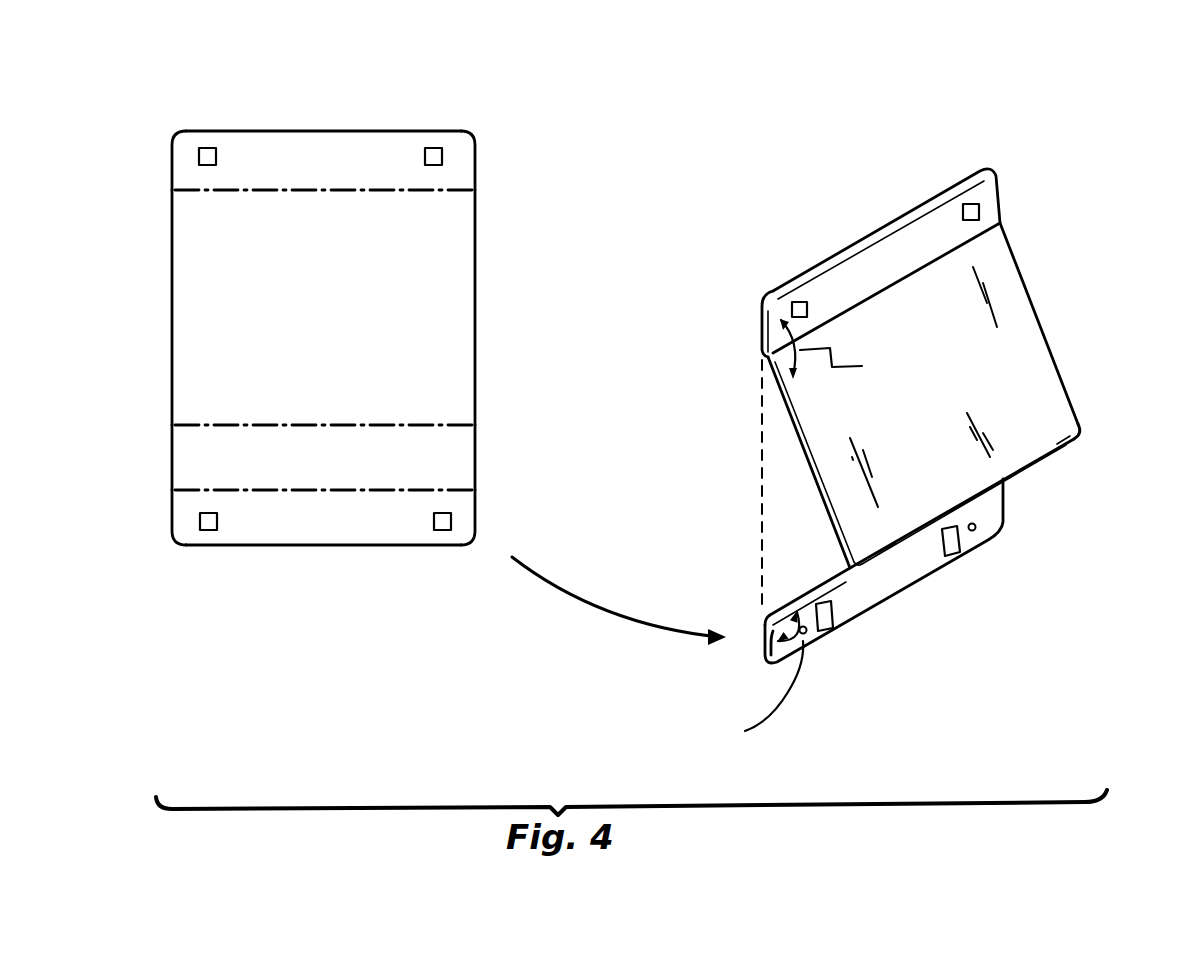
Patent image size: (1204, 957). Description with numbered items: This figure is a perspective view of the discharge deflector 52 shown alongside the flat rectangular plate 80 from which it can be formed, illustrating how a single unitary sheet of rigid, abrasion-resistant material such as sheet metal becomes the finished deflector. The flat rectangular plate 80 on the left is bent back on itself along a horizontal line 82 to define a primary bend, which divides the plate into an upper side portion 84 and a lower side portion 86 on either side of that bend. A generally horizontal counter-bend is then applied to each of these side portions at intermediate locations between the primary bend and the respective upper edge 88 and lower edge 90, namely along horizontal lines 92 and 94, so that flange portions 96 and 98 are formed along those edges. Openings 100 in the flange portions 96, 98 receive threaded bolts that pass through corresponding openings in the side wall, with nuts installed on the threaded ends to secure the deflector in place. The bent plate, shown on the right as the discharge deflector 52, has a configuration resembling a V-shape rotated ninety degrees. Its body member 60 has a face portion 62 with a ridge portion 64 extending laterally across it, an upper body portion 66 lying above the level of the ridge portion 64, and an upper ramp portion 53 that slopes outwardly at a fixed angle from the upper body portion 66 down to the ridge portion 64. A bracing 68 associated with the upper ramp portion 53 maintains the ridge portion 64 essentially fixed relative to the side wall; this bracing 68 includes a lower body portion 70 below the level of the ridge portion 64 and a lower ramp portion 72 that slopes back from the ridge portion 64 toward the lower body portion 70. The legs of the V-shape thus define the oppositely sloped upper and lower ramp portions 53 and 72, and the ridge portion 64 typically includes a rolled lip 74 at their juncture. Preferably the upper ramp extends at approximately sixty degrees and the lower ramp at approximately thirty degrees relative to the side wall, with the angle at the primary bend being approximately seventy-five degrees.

The discharge deflector 52 is at (1043, 253).
The upper ramp portion 53 is at (1025, 345).
The body member 60 is at (746, 325).
The face portion 62 is at (1037, 383).
The ridge portion 64 is at (1056, 446).
The upper body portion 66 is at (990, 179).
The bracing 68 is at (797, 580).
The lower body portion 70 is at (1004, 500).
The lower ramp portion 72 is at (845, 580).
The rolled lip 74 is at (932, 547).
The rectangular plate 80 is at (498, 205).
The horizontal line 82 is at (412, 422).
The upper side portion 84 is at (218, 318).
The lower side portion 86 is at (205, 462).
The upper edge 88 is at (280, 130).
The lower edge 90 is at (292, 548).
The horizontal line 92 is at (255, 192).
The horizontal line 94 is at (458, 487).
The flange portion 96 is at (341, 152).
The flange portion 98 is at (390, 525).
The openings 100 is at (207, 148).